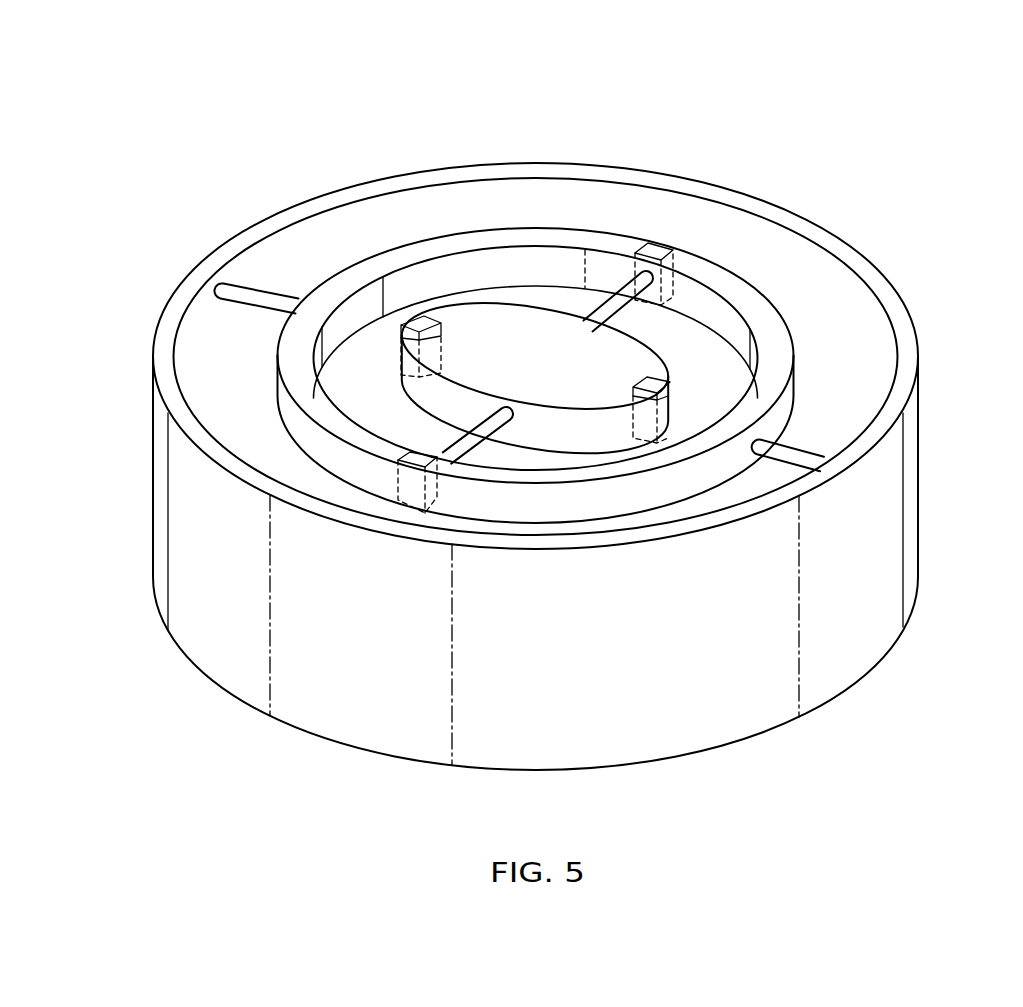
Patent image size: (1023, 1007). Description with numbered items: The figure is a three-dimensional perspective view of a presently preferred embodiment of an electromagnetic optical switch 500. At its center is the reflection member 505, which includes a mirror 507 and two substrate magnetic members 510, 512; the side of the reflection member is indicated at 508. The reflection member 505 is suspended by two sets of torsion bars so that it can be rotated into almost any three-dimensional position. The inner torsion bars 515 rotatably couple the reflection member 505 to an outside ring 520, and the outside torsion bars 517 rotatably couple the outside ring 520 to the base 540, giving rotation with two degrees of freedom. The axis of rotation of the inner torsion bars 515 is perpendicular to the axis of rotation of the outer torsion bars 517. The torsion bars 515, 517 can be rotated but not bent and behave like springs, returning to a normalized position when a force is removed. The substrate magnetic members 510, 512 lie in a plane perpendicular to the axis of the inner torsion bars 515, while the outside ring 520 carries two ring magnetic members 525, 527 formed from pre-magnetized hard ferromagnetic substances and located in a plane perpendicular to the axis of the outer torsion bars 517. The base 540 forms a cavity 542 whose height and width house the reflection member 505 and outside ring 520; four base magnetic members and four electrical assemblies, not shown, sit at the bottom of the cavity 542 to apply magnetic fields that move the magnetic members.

The electromagnetic optical switch 500 is at (848, 124).
The reflection member 505 is at (555, 348).
The mirror 507 is at (508, 337).
The side wall of disc 508 is at (567, 423).
The substrate magnetic member 510 is at (663, 377).
The substrate magnetic member 512 is at (417, 317).
The inner torsion bars 515 is at (487, 440).
The outside torsion bars 517 is at (797, 453).
The outside ring 520 is at (315, 397).
The ring magnetic member 525 is at (410, 460).
The ring magnetic member 527 is at (652, 243).
The base 540 is at (300, 205).
The cavity 542 is at (686, 350).